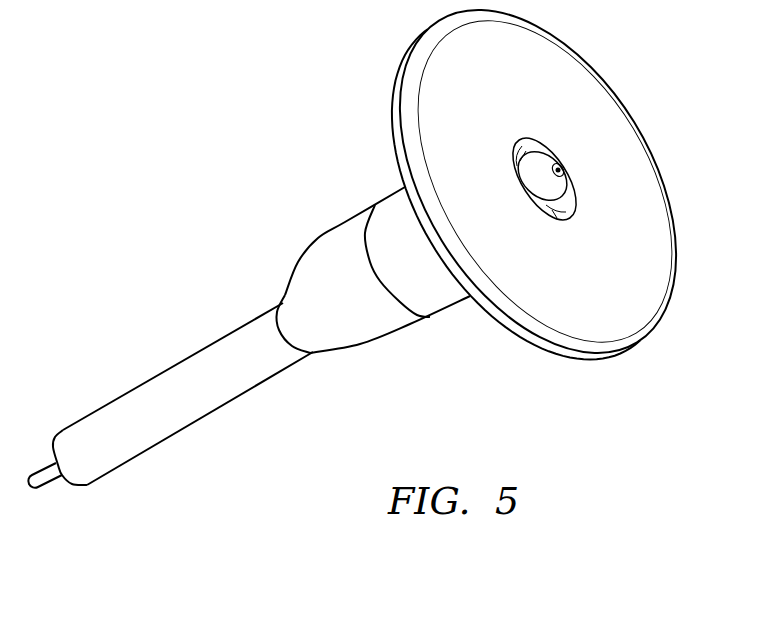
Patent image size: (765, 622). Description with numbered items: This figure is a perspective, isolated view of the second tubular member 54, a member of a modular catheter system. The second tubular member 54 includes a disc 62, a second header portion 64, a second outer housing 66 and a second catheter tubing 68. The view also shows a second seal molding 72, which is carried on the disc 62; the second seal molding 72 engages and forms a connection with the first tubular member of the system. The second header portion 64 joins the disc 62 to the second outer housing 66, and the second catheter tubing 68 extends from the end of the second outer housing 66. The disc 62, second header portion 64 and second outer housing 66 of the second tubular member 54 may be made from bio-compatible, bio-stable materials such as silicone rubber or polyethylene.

The second tubular member 54 is at (245, 424).
The disc 62 is at (609, 358).
The second header portion 64 is at (392, 336).
The second outer housing 66 is at (150, 378).
The second catheter tubing 68 is at (48, 488).
The second seal molding 72 is at (547, 155).